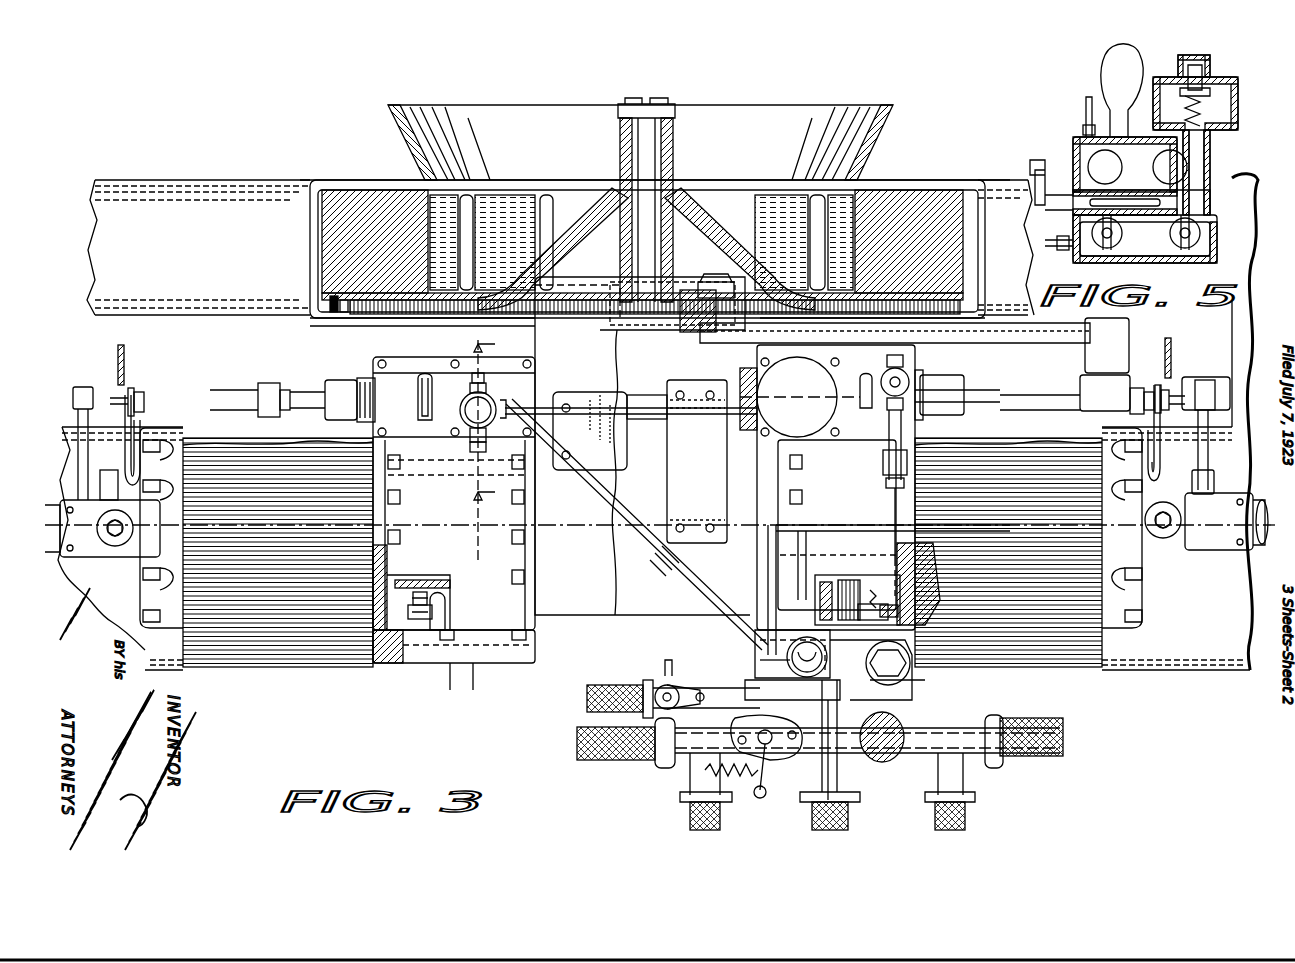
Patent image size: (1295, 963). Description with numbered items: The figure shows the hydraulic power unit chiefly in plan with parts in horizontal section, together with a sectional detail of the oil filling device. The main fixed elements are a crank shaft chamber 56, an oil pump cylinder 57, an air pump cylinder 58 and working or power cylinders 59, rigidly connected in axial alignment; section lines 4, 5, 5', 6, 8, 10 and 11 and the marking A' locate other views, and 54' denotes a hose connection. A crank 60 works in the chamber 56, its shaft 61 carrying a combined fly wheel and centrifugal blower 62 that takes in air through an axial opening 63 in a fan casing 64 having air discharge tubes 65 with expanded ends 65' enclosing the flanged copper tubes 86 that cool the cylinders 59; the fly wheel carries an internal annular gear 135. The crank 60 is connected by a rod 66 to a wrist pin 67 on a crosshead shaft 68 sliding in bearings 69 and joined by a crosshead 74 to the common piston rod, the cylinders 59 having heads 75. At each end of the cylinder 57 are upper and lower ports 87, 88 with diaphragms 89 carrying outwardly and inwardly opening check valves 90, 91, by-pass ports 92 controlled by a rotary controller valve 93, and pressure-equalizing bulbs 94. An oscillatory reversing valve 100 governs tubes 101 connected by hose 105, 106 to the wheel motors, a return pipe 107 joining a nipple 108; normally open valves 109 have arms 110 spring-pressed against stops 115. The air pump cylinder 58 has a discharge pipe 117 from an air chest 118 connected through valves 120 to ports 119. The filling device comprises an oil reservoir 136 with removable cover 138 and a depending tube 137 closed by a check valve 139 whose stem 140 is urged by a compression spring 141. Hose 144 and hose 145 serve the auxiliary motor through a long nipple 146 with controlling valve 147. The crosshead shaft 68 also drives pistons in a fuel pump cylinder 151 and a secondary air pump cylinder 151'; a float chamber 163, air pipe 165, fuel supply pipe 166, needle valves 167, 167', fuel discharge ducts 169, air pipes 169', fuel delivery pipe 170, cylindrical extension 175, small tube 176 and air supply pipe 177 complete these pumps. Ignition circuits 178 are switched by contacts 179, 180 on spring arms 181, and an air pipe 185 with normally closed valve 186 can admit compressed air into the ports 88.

In FIG. 3, the section line 4 is at (644, 530).
In FIG. 3, the section line / manifold 5 is at (858, 665).
In FIG. 3, the section line 5' is at (707, 657).
In FIG. 3, the section line 6 is at (836, 822).
In FIG. 3, the operating rod 8 is at (700, 402).
In FIG. 3, the section line 10 is at (473, 443).
In FIG. 3, the section line / pipe 11 is at (712, 720).
In FIG. 3, the hose connection 54' is at (832, 792).
In FIG. 3, the crank shaft chamber 56 is at (592, 615).
In FIG. 3, the oil pump cylinder 57 is at (825, 470).
In FIG. 3, the air pump cylinder 58 is at (495, 560).
In FIG. 3, the working or power cylinders 59 is at (180, 582).
In FIG. 3, the crank 60 is at (665, 312).
In FIG. 3, the crank shaft 61 is at (640, 222).
In FIG. 3, the combined fly wheel and centrifugal fan or blower 62 is at (900, 195).
In FIG. 3, the axial opening 63 is at (790, 118).
In FIG. 3, the fan casing 64 is at (880, 178).
In FIG. 3, the air discharge tubes 65 is at (560, 230).
In FIG. 3, the expanded ends 65' is at (1180, 434).
In FIG. 3, the rod 66 is at (1088, 345).
In FIG. 3, the wrist pin 67 is at (1100, 382).
In FIG. 3, the crosshead shaft 68 is at (645, 393).
In FIG. 3, the bearings 69 is at (340, 383).
In FIG. 3, the crosshead 74 is at (616, 458).
In FIG. 3, the heads 75 is at (140, 560).
In FIG. 3, the flanged copper tubes 86 is at (285, 618).
In FIG. 3, the upper ports 87 is at (880, 590).
In FIG. 5, the upper ports 87 is at (1082, 148).
In FIG. 5, the lower ports 88 is at (1160, 252).
In FIG. 3, the diaphragms 89 is at (922, 595).
In FIG. 3, the outwardly opening check valves 90 is at (935, 611).
In FIG. 5, the outwardly opening check valves 90 is at (1165, 158).
In FIG. 5, the inwardly opening check valves 91 is at (1115, 238).
In FIG. 3, the by-pass ports 92 is at (905, 672).
In FIG. 5, the by-pass ports 92 is at (1130, 212).
In FIG. 5, the rotary controller valve 93 is at (1105, 167).
In FIG. 3, the pressure-equalizing bulbs 94 is at (800, 640).
In FIG. 5, the pressure-equalizing bulbs 94 is at (1100, 62).
In FIG. 3, the oscillatory reversing valve 100 is at (798, 703).
In FIG. 3, the tubes 101 is at (842, 790).
In FIG. 3, the flexible tubes or hose 105 is at (620, 762).
In FIG. 3, the flexible pipe tubes or hose 106 is at (590, 748).
In FIG. 3, the common return pipe 107 is at (845, 822).
In FIG. 3, the nipple 108 is at (822, 790).
In FIG. 3, the normally open valves 109 is at (735, 772).
In FIG. 3, the arms 110 is at (755, 795).
In FIG. 3, the stops 115 is at (768, 748).
In FIG. 3, the air discharge pipe 117 is at (470, 680).
In FIG. 3, the air chest 118 is at (408, 650).
In FIG. 3, the ports 119 is at (400, 580).
In FIG. 3, the valves 120 is at (385, 650).
In FIG. 3, the internal annular gear 135 is at (336, 297).
In FIG. 5, the oil reservoir 136 is at (1238, 118).
In FIG. 5, the depending tube 137 is at (1212, 165).
In FIG. 5, the removable cover 138 is at (1210, 90).
In FIG. 5, the check valve 139 is at (1215, 218).
In FIG. 5, the stem 140 is at (1196, 70).
In FIG. 5, the compression spring 141 is at (1172, 95).
In FIG. 3, the flexible pipe or hose 144 is at (625, 688).
In FIG. 3, the flexible pipe or hose 145 is at (595, 698).
In FIG. 3, the long nipple 146 is at (676, 684).
In FIG. 3, the controlling valve 147 is at (665, 672).
In FIG. 3, the cylinder 151 is at (821, 487).
In FIG. 3, the cylinder 151' is at (406, 357).
In FIG. 3, the closed chamber 163 is at (848, 378).
In FIG. 3, the air pipe 165 is at (705, 418).
In FIG. 3, the fuel supply pipe 166 is at (838, 397).
In FIG. 3, the needle valve 167 is at (854, 386).
In FIG. 3, the needle valve 167' is at (497, 415).
In FIG. 3, the fuel discharge ducts 169 is at (895, 372).
In FIG. 3, the small air pipes 169' is at (454, 400).
In FIG. 3, the fuel delivery pipe 170 is at (107, 528).
In FIG. 3, the cylindrical extension 175 is at (885, 455).
In FIG. 3, the small tube 176 is at (826, 527).
In FIG. 5, the small tube 176 is at (1086, 95).
In FIG. 3, the air supply pipe 177 is at (420, 405).
In FIG. 3, the ignition circuits 178 is at (128, 352).
In FIG. 3, the contacts 179 is at (140, 392).
In FIG. 3, the contacts 180 is at (266, 390).
In FIG. 3, the spring arms 181 is at (125, 455).
In FIG. 3, the air pipe 185 is at (600, 505).
In FIG. 5, the air pipe 185 is at (1055, 248).
In FIG. 3, the normally closed valve 186 is at (660, 575).
In FIG. 3, the axis A' is at (1233, 561).